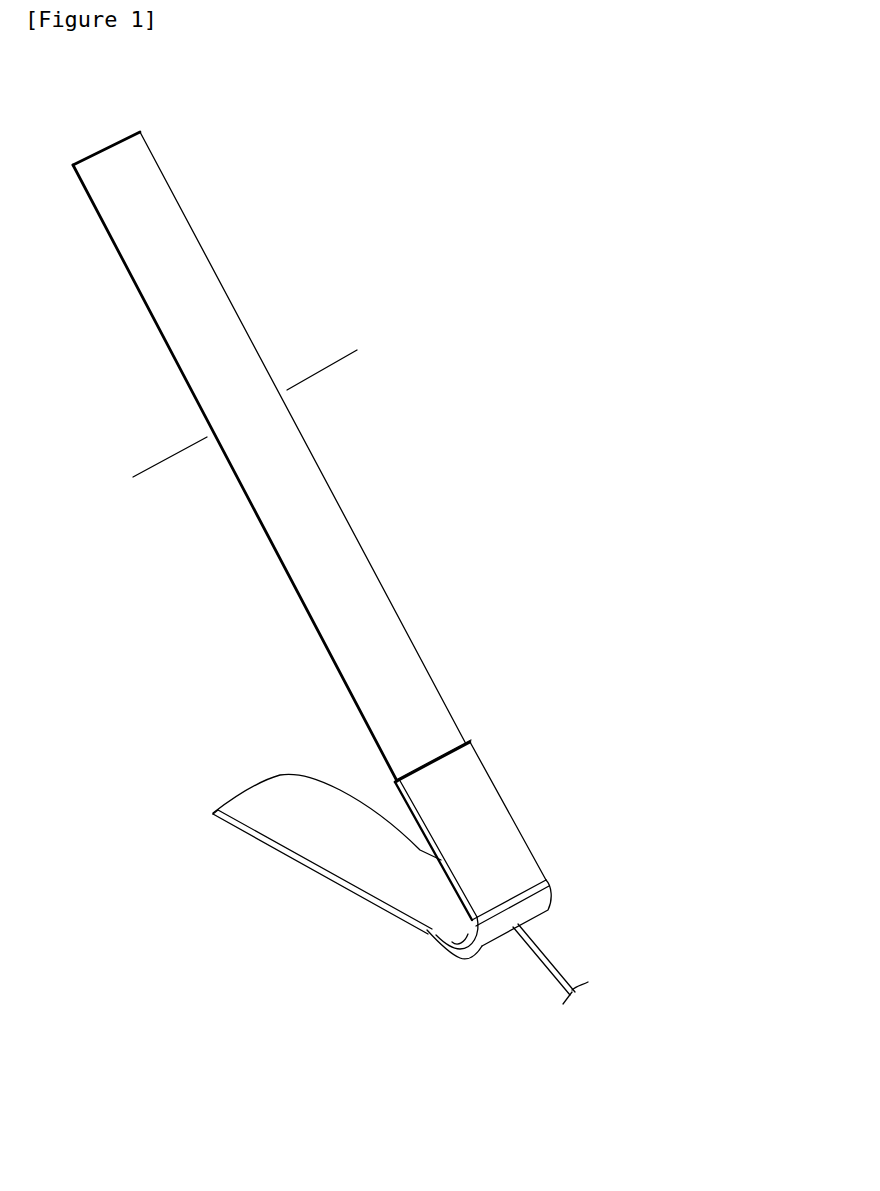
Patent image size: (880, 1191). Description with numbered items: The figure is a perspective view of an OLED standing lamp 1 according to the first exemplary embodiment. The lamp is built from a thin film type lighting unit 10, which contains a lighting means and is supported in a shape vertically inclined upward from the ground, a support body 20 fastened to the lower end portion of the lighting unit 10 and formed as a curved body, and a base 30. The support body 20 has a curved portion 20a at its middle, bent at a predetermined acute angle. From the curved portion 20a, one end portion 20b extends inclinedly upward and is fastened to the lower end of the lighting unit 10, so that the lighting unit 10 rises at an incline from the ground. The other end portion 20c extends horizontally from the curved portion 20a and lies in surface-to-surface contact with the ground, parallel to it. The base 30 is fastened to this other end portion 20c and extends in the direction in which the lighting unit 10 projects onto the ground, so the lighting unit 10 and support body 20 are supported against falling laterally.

The OLED standing lamp 1 is at (517, 240).
The thin film type lighting unit 10 is at (222, 277).
The support body 20 is at (512, 810).
The curved portion 20a is at (545, 906).
The one end portion 20b is at (440, 752).
The other end portion 20c is at (443, 917).
The base 30 is at (350, 887).